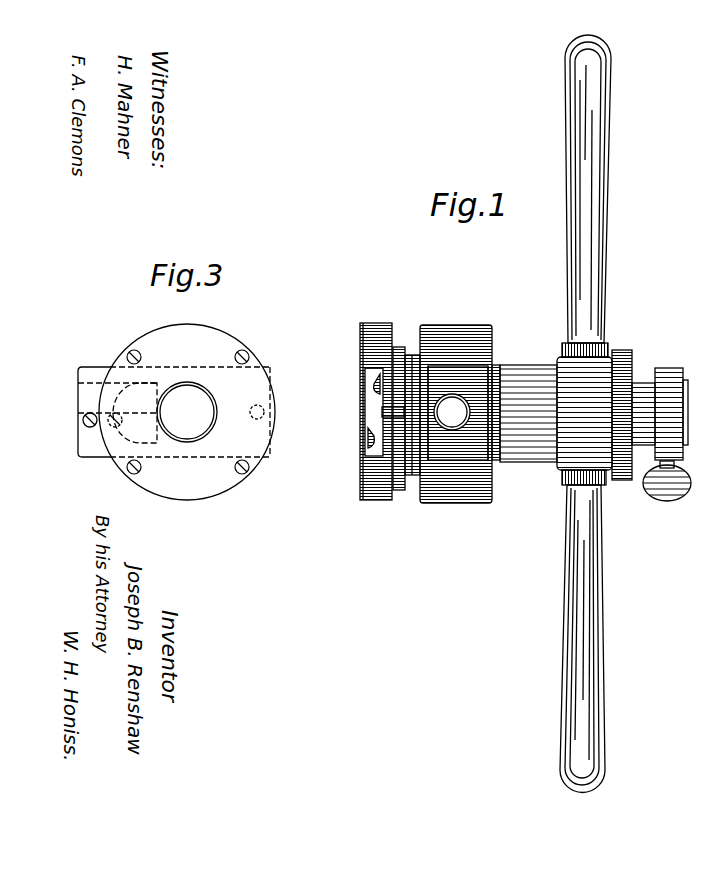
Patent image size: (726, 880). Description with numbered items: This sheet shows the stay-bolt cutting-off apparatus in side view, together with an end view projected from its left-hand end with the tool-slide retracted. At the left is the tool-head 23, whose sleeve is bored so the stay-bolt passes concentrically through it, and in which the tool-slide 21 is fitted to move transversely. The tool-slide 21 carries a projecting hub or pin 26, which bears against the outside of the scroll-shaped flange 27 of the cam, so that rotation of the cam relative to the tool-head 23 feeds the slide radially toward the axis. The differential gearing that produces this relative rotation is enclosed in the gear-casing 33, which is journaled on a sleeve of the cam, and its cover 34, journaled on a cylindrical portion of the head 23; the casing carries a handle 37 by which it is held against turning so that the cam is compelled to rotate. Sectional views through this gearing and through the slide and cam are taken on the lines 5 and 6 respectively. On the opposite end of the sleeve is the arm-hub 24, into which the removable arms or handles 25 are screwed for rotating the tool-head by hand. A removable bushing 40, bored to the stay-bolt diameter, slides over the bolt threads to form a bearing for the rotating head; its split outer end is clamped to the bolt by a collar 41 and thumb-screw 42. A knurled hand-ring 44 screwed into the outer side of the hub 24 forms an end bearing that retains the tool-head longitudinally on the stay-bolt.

In FIG. 1, the section line 5 5 is at (477, 550).
In FIG. 1, the section line 6 6 is at (403, 548).
In FIG. 1, the tool-slide 21 is at (372, 407).
In FIG. 3, the tool-slide 21 is at (92, 457).
In FIG. 1, the tool-head 23 is at (375, 500).
In FIG. 3, the tool-head 23 is at (187, 412).
In FIG. 1, the arm-hub 24 is at (530, 462).
In FIG. 1, the arms or handles 25 is at (592, 233).
In FIG. 1, the projecting hub or pin 26 is at (393, 414).
In FIG. 3, the projecting hub or pin 26 is at (262, 411).
In FIG. 1, the flange of the cam 27 is at (407, 478).
In FIG. 1, the gear-casing 33 is at (452, 326).
In FIG. 1, the cover of the gear-casing 34 is at (492, 336).
In FIG. 1, the handle of the gear-casing 37 is at (452, 412).
In FIG. 1, the removable bushing 40 is at (650, 383).
In FIG. 1, the collar 41 is at (672, 372).
In FIG. 1, the thumb-screw 42 is at (677, 494).
In FIG. 1, the knurled hand-ring 44 is at (619, 481).